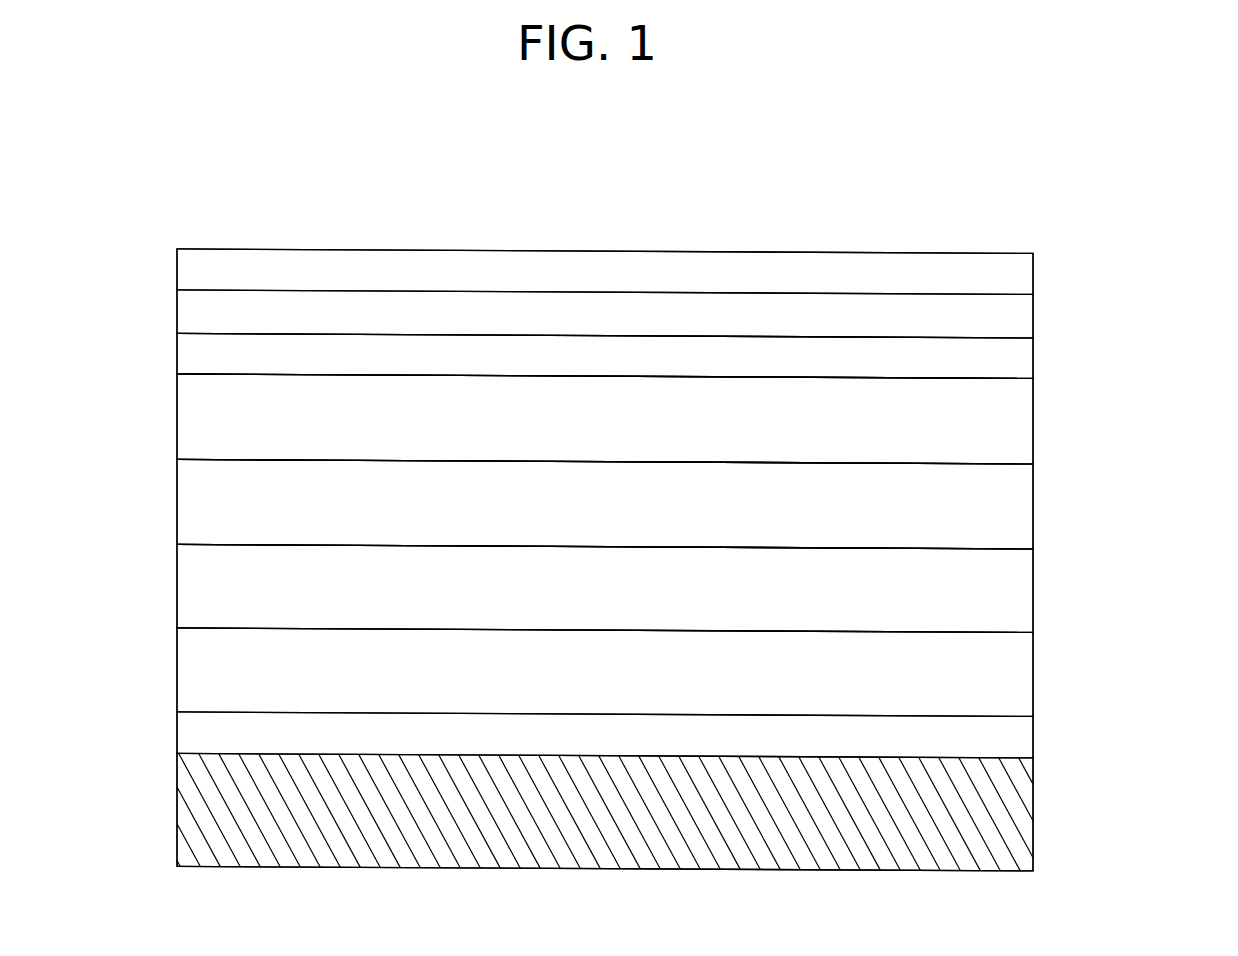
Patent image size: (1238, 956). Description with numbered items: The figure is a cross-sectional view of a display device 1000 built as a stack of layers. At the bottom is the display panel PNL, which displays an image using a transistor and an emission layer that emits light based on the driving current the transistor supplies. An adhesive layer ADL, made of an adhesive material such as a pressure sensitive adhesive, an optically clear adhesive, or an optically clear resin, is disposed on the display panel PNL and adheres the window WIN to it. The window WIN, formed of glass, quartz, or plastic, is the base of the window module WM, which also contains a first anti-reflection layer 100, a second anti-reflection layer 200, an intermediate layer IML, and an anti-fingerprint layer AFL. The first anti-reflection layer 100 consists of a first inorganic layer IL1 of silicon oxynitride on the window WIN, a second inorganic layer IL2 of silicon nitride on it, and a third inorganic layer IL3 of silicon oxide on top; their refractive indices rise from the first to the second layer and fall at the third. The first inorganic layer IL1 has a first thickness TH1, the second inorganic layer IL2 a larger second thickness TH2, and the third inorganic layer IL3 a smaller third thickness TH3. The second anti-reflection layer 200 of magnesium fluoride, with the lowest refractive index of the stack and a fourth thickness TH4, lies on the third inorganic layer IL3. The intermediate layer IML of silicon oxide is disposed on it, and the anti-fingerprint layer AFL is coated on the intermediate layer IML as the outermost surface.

The display device 1000 is at (1068, 212).
The window module WM is at (697, 483).
The anti-fingerprint layer AFL is at (1020, 273).
The intermediate layer IML is at (1020, 317).
The second anti-reflection layer 200 is at (1020, 358).
The first anti-reflection layer 100 is at (668, 503).
The third inorganic layer IL3 is at (1025, 418).
The second inorganic layer IL2 is at (1025, 502).
The first inorganic layer IL1 is at (640, 588).
The window WIN is at (672, 672).
The adhesive layer ADL is at (1025, 738).
The display panel PNL is at (1025, 809).
The first thickness TH1 is at (143, 544).
The second thickness TH2 is at (143, 460).
The third thickness TH3 is at (143, 374).
The fourth thickness TH4 is at (143, 334).